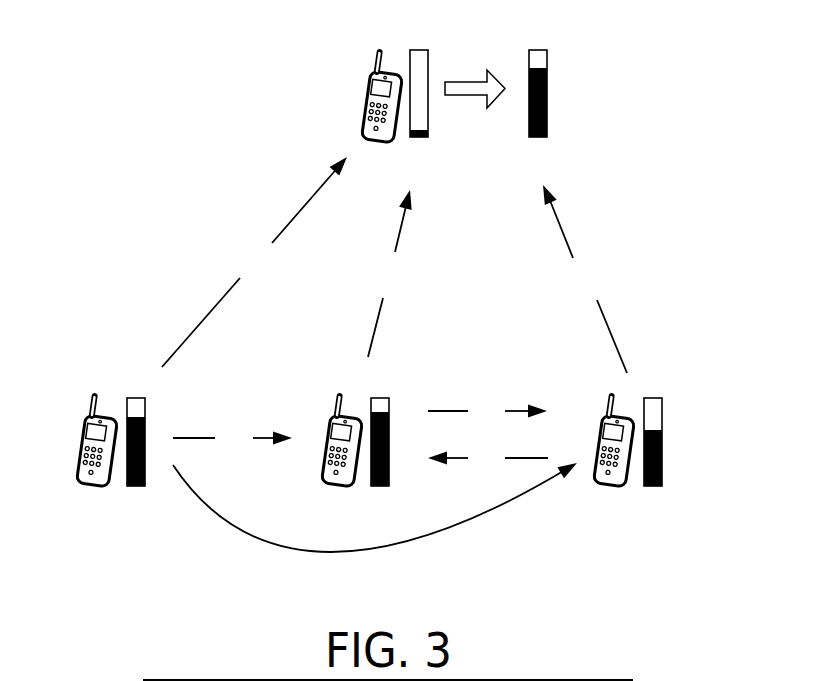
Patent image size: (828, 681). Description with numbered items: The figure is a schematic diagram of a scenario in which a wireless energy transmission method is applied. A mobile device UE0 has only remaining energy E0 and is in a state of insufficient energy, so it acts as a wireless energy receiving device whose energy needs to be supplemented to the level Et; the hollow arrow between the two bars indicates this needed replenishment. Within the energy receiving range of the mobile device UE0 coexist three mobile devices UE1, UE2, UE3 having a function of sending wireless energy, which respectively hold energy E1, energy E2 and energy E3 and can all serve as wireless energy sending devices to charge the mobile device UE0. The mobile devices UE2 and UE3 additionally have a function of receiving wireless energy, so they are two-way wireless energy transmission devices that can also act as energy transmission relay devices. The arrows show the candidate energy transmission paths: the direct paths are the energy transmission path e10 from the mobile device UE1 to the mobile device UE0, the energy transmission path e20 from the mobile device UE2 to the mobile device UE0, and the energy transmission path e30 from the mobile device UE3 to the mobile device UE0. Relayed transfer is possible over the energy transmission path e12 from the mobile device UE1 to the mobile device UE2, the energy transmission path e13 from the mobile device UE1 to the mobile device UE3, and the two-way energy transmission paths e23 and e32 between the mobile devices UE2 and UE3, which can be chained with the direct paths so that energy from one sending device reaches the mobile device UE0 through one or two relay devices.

The mobile device UE0 is at (381, 116).
The mobile device UE1 is at (98, 459).
The mobile device UE2 is at (342, 459).
The mobile device UE3 is at (615, 459).
The remaining energy E0 is at (421, 76).
The supplemented energy level Et is at (497, 76).
The energy E1 is at (138, 428).
The energy E2 is at (381, 428).
The energy E3 is at (655, 428).
The energy transmission path e10 is at (257, 260).
The energy transmission path e20 is at (392, 272).
The energy transmission path e30 is at (582, 277).
The energy transmission path e12 is at (232, 439).
The energy transmission path e23 is at (487, 412).
The energy transmission path e32 is at (488, 459).
The energy transmission path e13 is at (376, 523).